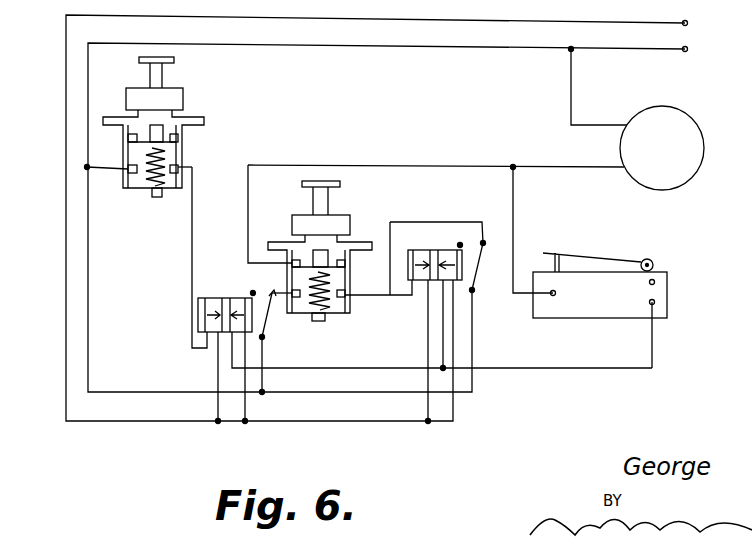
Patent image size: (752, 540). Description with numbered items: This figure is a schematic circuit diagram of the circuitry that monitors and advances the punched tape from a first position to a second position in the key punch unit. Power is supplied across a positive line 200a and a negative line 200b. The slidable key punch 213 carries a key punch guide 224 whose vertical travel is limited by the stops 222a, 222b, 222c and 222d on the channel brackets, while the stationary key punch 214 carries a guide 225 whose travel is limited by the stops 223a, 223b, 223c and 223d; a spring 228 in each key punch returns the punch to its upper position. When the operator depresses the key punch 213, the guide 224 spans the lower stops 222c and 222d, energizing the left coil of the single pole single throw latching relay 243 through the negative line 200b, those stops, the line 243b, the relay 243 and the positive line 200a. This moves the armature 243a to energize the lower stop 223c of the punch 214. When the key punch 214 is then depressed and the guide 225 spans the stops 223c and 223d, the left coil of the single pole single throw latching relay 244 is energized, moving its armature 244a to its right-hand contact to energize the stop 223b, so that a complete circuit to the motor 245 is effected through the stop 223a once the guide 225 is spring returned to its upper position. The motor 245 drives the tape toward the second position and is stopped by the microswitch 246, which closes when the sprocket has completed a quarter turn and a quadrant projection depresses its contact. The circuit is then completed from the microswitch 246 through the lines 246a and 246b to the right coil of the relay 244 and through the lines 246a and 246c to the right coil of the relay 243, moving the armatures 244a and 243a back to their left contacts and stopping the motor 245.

The positive line 200a is at (454, 22).
The negative line 200b is at (447, 48).
The key punch 213 is at (160, 78).
The key punch 214 is at (322, 200).
The stop 222a is at (128, 139).
The stop 222b is at (178, 140).
The stop 222c is at (128, 176).
The stop 222d is at (173, 188).
The key punch guide 224 is at (180, 143).
The spring 228 is at (150, 173).
The stop 223a is at (292, 263).
The stop 223b is at (342, 266).
The stop 223c is at (293, 313).
The stop 223d is at (347, 295).
The guide 225 is at (292, 266).
The single pole single throw latching relay 243 is at (218, 298).
The armature 243a is at (268, 320).
The line 243b is at (192, 262).
The single pole single throw latching relay 244 is at (433, 243).
The armature 244a is at (477, 272).
The motor 245 is at (688, 136).
The microswitch 246 is at (618, 308).
The line 246a is at (575, 366).
The line 246b is at (443, 350).
The line 246c is at (232, 348).